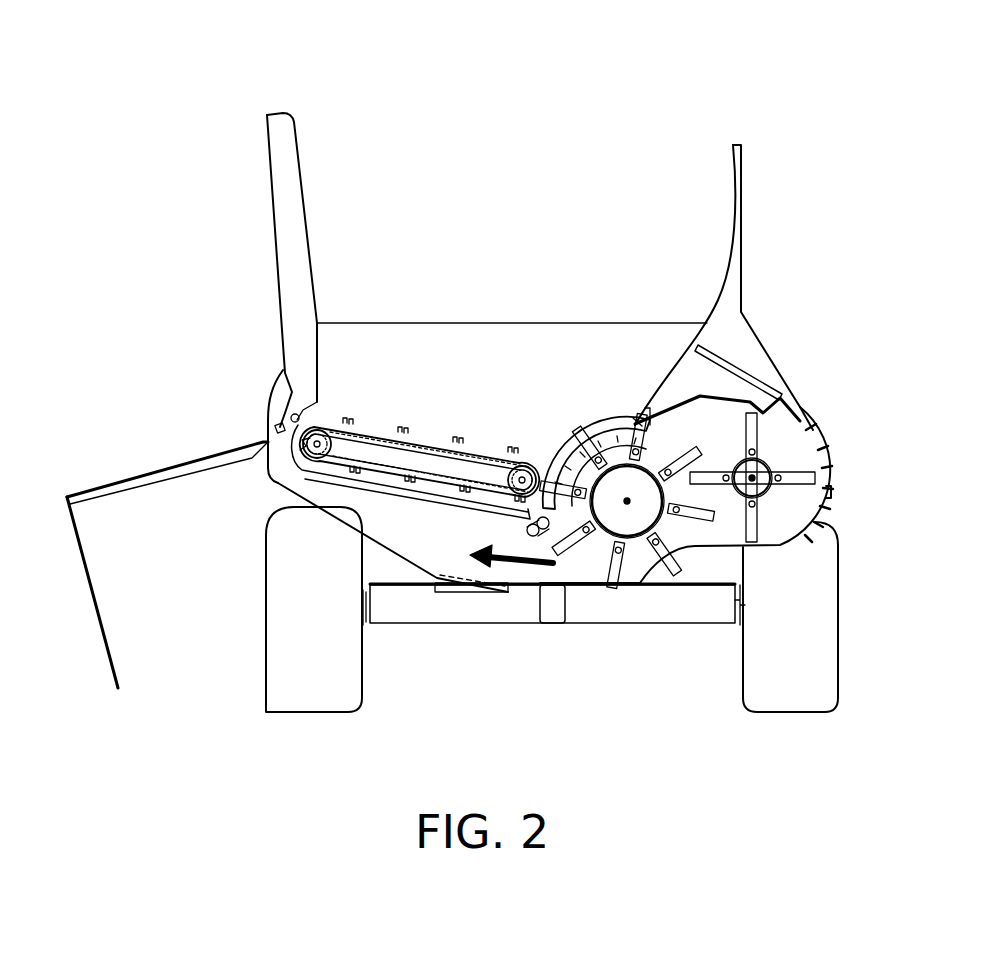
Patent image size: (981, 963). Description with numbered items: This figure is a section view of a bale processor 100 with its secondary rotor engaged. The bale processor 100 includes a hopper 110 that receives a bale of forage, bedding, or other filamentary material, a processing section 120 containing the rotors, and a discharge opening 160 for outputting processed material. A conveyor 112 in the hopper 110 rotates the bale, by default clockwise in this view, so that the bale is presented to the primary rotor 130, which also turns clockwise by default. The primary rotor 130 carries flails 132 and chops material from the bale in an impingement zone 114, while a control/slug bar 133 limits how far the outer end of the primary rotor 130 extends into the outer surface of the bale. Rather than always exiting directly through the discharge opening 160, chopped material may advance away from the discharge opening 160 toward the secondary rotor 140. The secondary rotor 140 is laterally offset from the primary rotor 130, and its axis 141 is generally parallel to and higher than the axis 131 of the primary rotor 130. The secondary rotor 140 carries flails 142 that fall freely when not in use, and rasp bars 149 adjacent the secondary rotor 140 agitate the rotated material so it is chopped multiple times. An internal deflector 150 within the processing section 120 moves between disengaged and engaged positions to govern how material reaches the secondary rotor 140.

The bale processor 100 is at (899, 69).
The hopper 110 is at (757, 196).
The conveyor 112 is at (433, 443).
The impingement zone 114 is at (537, 439).
The processing section 120 is at (827, 406).
The primary rotor 130 is at (627, 504).
The axis of the primary rotor 131 is at (623, 528).
The flails 132 is at (703, 525).
The control/slug bar 133 is at (578, 452).
The secondary rotor 140 is at (758, 467).
The axis of the secondary rotor 141 is at (760, 483).
The flails 142 is at (760, 528).
The rasp bars 149 is at (833, 492).
The internal deflector 150 is at (728, 400).
The discharge opening 160 is at (387, 550).